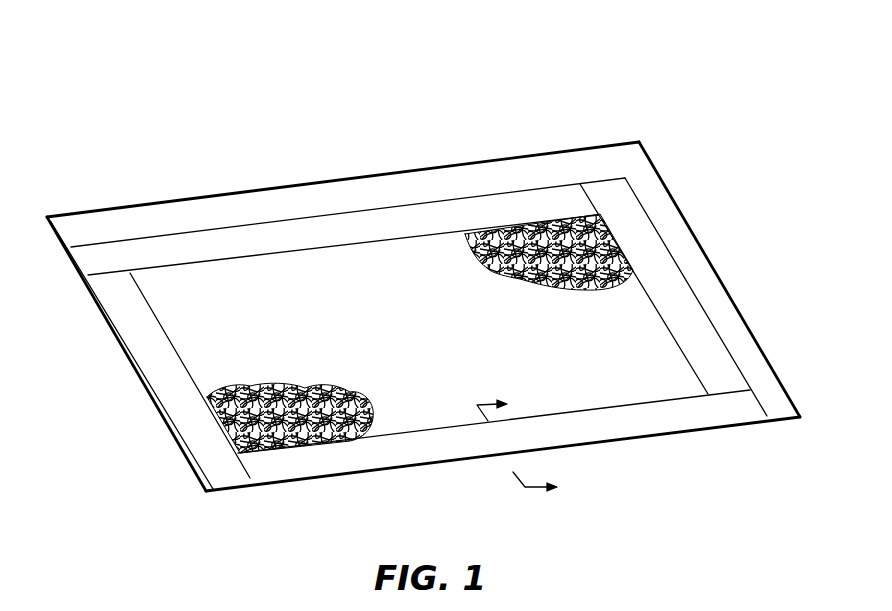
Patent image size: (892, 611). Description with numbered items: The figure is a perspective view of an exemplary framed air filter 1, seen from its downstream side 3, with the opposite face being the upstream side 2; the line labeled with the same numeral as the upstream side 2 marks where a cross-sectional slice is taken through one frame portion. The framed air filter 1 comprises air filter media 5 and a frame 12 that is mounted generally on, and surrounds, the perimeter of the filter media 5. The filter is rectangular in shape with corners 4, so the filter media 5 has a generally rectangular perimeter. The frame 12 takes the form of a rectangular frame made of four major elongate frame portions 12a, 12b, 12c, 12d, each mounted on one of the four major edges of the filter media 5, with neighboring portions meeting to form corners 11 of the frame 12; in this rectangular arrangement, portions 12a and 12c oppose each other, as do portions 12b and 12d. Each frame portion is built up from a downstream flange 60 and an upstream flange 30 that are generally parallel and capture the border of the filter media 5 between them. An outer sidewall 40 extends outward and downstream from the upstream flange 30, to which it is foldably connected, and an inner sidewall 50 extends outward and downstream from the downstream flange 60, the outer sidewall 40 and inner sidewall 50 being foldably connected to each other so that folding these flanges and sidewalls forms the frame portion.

The framed air filter 1 is at (429, 283).
The upstream side 2 is at (592, 455).
The downstream side 3 is at (713, 168).
The corners 4 is at (47, 216).
The air filter media 5 is at (530, 225).
The corners of frame 11 is at (801, 418).
The frame 12 is at (423, 324).
The frame portion 12a is at (170, 200).
The frame portion 12b is at (707, 257).
The frame portion 12c is at (403, 467).
The frame portion 12d is at (130, 362).
The upstream flange 30 is at (455, 212).
The outer sidewall 40 is at (380, 192).
The inner sidewall 50 is at (230, 213).
The downstream flange 60 is at (568, 197).